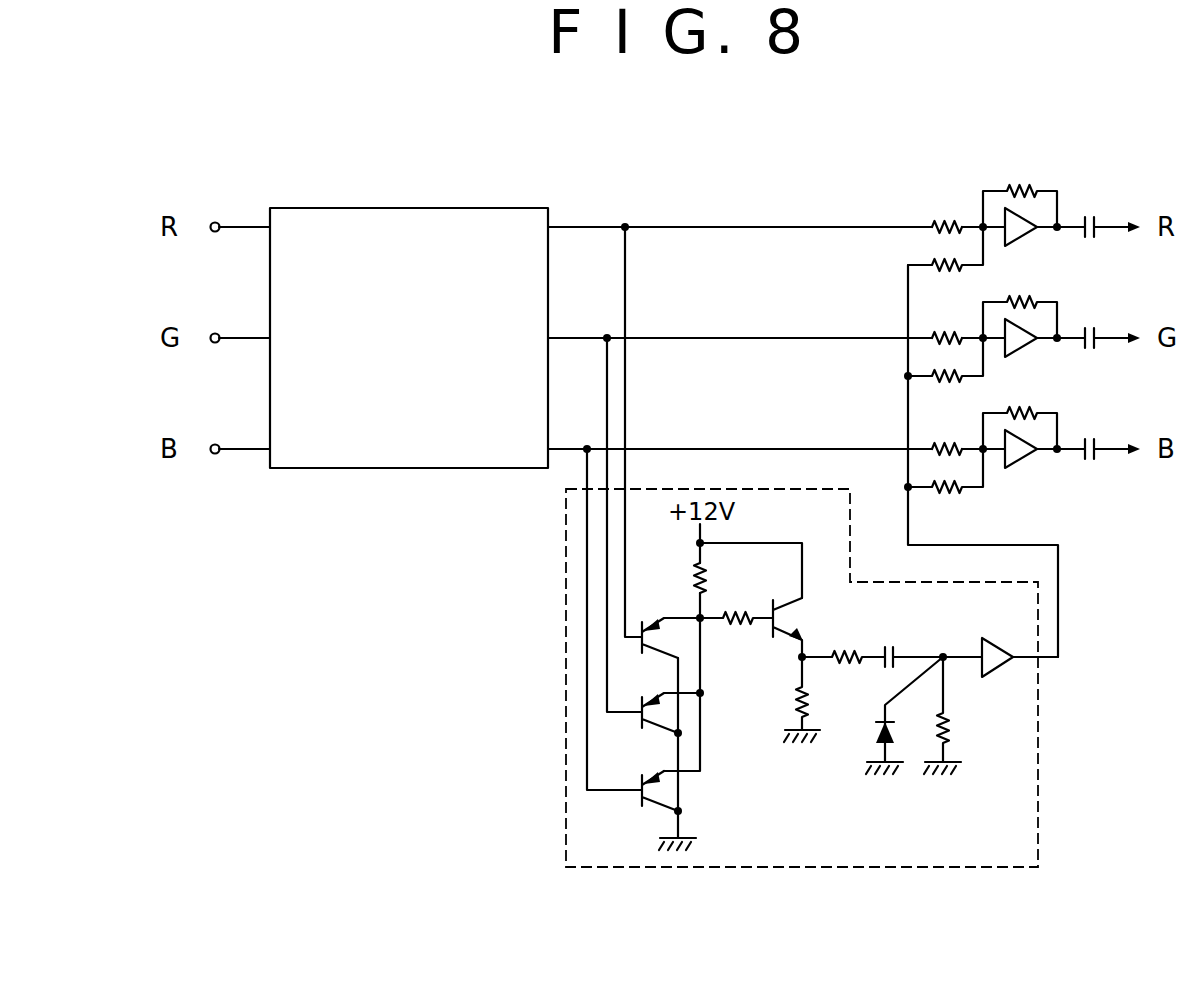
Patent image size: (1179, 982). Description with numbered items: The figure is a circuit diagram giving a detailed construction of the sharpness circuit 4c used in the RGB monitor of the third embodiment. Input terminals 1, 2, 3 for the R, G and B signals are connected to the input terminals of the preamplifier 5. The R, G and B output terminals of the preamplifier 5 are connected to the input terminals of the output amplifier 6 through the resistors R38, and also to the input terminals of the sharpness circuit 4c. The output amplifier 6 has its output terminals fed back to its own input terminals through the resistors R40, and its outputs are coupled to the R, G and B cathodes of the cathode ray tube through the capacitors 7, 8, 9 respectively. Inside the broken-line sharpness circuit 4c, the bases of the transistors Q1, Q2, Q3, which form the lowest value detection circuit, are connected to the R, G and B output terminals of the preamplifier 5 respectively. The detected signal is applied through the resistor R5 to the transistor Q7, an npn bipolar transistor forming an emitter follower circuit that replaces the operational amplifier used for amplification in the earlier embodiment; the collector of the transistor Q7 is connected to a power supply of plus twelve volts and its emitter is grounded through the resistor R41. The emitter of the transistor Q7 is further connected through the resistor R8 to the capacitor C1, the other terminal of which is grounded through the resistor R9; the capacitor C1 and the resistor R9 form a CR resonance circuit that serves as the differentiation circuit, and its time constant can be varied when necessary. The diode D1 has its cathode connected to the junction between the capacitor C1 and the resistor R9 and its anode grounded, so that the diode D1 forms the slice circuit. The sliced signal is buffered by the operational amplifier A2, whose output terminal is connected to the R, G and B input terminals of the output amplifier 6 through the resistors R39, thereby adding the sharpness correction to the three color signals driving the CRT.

The input terminal 1 is at (218, 222).
The input terminal 2 is at (218, 333).
The input terminal 3 is at (218, 444).
The preamplifier 5 is at (418, 208).
The output amplifier 6 is at (992, 338).
The capacitor 7 is at (1097, 222).
The capacitor 8 is at (1097, 333).
The capacitor 9 is at (1097, 444).
The sharpness circuit 4c is at (797, 867).
The resistor R38 is at (941, 319).
The resistor R39 is at (896, 392).
The resistor R40 is at (1020, 296).
The resistor R5 is at (736, 640).
The resistor R41 is at (779, 699).
The resistor R8 is at (843, 639).
The resistor R9 is at (955, 715).
The capacitor C1 is at (929, 641).
The diode D1 is at (892, 715).
The transistor Q1 is at (665, 621).
The transistor Q2 is at (665, 697).
The transistor Q3 is at (654, 774).
The transistor Q7 is at (779, 611).
The operational amplifier A2 is at (1020, 646).